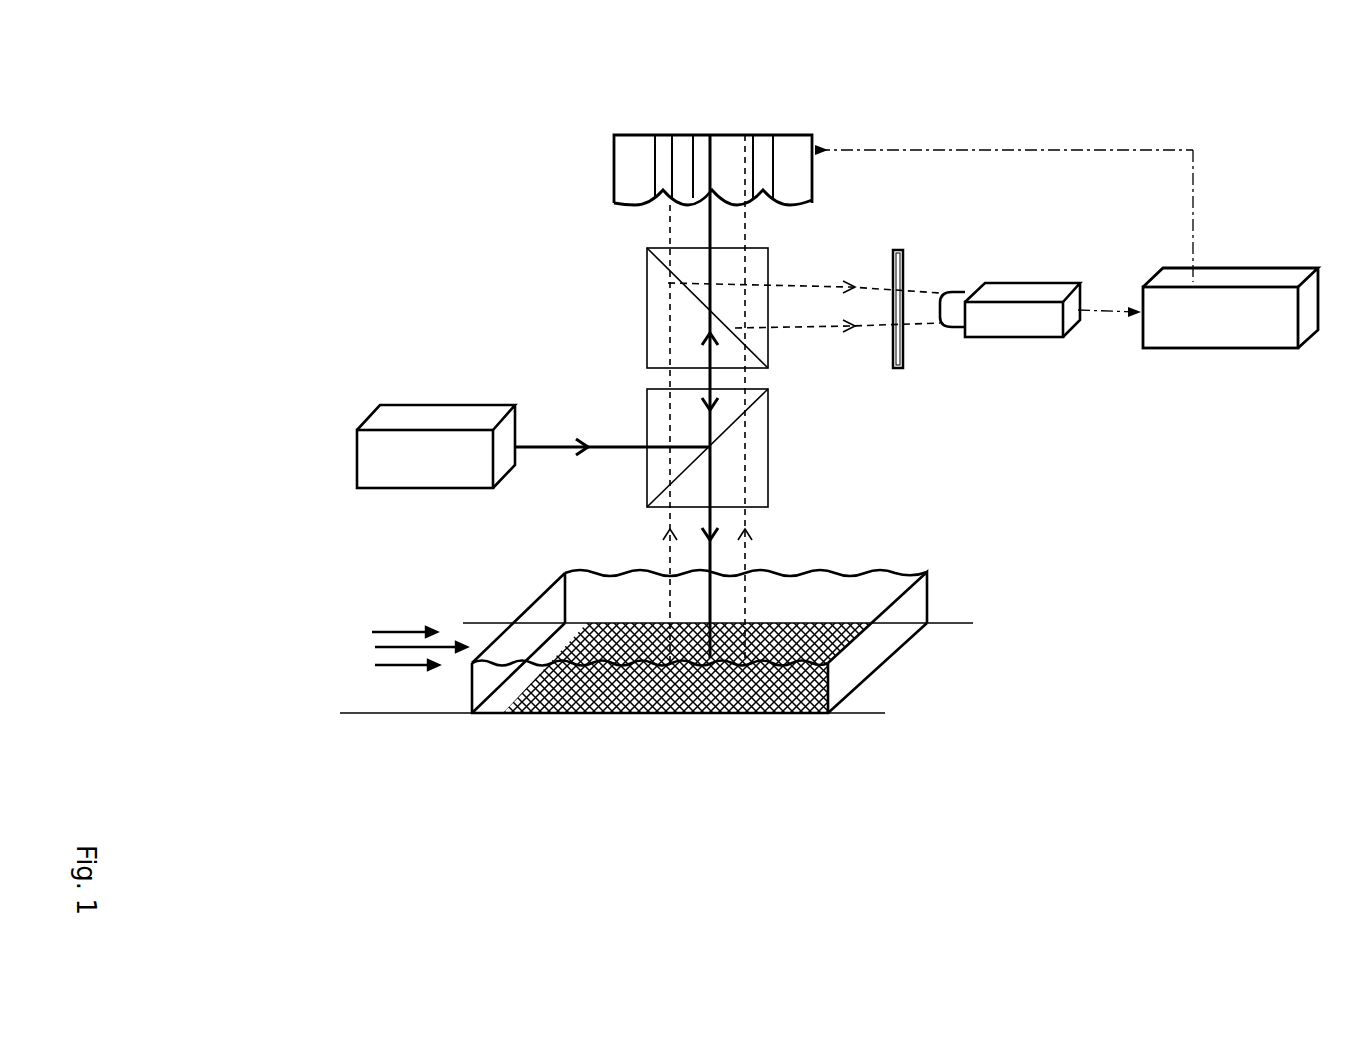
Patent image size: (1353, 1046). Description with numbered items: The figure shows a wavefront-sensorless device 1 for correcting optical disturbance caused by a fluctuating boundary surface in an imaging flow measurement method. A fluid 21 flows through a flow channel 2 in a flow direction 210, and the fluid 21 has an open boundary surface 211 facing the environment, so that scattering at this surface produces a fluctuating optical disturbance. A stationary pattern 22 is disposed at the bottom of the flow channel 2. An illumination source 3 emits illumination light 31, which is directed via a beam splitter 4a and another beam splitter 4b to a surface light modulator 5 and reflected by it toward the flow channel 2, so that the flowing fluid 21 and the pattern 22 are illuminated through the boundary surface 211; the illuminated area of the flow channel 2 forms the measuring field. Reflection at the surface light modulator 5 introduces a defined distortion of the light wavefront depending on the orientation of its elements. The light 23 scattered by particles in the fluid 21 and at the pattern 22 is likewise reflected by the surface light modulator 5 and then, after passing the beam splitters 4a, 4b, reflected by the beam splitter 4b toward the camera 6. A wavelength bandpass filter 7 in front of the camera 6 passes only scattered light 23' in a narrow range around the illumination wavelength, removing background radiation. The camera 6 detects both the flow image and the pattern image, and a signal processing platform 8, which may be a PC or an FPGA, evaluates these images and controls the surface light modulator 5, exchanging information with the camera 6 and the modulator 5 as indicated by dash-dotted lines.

The wavefront-sensorless device 1 is at (497, 248).
The flow channel 2 is at (952, 620).
The fluid 21 is at (913, 603).
The boundary surface 211 is at (565, 573).
The flow direction 210 is at (373, 647).
The pattern 22 is at (622, 713).
The scattered light 23 is at (705, 399).
The scattered light 23' is at (804, 194).
The illumination source 3 is at (375, 452).
The illumination light 31 is at (565, 447).
The beam splitter 4a is at (768, 466).
The beam splitter 4b is at (648, 275).
The surface light modulator 5 is at (620, 133).
The camera 6 is at (1030, 340).
The wavelength bandpass filter 7 is at (905, 247).
The signal processing platform 8 is at (1197, 350).